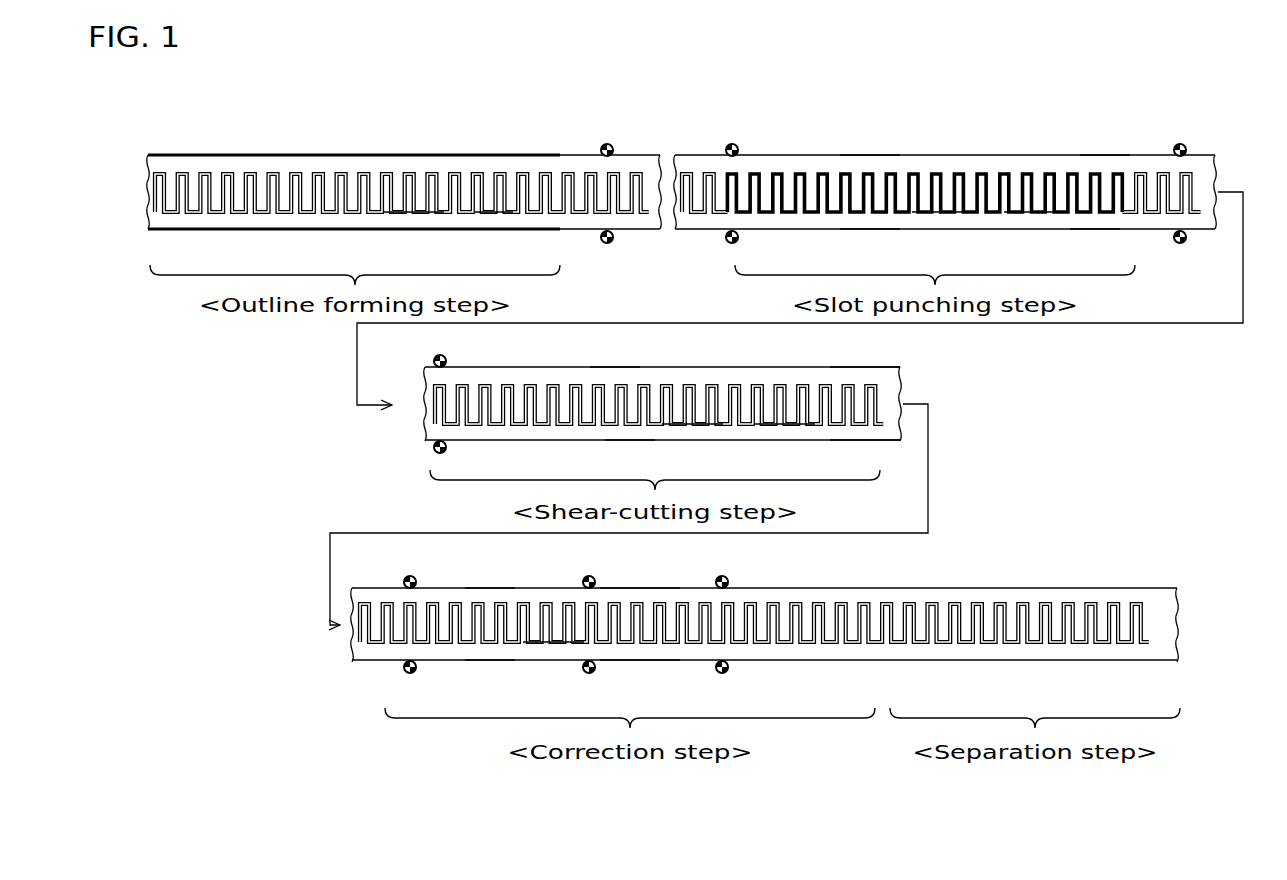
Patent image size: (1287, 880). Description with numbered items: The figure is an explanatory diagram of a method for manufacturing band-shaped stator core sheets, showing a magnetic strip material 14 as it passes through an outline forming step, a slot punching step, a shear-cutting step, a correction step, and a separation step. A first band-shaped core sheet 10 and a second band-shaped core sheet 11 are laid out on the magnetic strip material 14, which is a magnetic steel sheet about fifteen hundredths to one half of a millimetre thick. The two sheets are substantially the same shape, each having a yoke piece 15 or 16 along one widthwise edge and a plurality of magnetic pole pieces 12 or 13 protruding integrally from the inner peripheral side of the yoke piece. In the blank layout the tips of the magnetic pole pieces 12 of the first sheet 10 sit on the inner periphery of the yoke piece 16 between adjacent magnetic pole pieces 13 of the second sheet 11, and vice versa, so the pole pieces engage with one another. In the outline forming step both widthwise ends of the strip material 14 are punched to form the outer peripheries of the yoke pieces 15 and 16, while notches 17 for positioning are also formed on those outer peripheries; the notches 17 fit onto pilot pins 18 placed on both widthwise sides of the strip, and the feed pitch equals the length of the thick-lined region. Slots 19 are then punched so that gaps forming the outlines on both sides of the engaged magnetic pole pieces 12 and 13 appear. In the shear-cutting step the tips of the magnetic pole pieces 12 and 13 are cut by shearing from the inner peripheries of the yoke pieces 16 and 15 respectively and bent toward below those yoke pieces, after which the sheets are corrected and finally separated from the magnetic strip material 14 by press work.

The first band-shaped stator core sheet 10 is at (318, 232).
The second band-shaped stator core sheet 11 is at (365, 149).
The magnetic pole pieces 12 is at (430, 213).
The magnetic pole pieces 13 is at (385, 174).
The magnetic strip material 14 is at (245, 103).
The yoke piece 15 is at (245, 230).
The yoke piece 16 is at (308, 151).
The notches 17 is at (471, 150).
The pilot pins 18 is at (608, 143).
The slots 19 is at (926, 174).